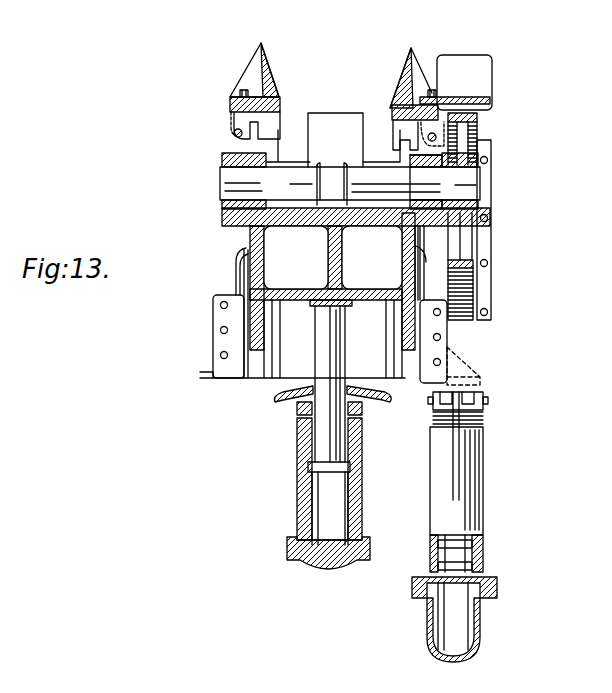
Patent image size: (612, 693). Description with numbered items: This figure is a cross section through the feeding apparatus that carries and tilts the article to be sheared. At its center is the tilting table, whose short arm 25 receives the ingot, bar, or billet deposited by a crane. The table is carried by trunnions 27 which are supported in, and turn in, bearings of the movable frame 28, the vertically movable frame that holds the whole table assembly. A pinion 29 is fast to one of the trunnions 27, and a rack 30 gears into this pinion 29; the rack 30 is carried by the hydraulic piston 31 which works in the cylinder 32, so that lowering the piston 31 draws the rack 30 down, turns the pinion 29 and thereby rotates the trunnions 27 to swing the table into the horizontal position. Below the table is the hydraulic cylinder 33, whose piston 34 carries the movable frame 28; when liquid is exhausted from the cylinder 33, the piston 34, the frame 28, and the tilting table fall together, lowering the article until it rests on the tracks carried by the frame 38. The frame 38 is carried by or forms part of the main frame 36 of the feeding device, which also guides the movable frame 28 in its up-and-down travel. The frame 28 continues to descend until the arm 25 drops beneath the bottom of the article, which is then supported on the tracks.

The short arm of tilting table 25 is at (337, 127).
The trunnions 27 is at (232, 184).
The movable frame 28 is at (330, 250).
The pinion 29 is at (470, 266).
The rack 30 is at (460, 314).
The hydraulic piston 31 is at (482, 552).
The cylinder 32 is at (434, 552).
The hydraulic cylinder 33 is at (298, 498).
The piston 34 is at (327, 362).
The main frame of feeding device 36 is at (240, 262).
The frame 38 is at (405, 62).